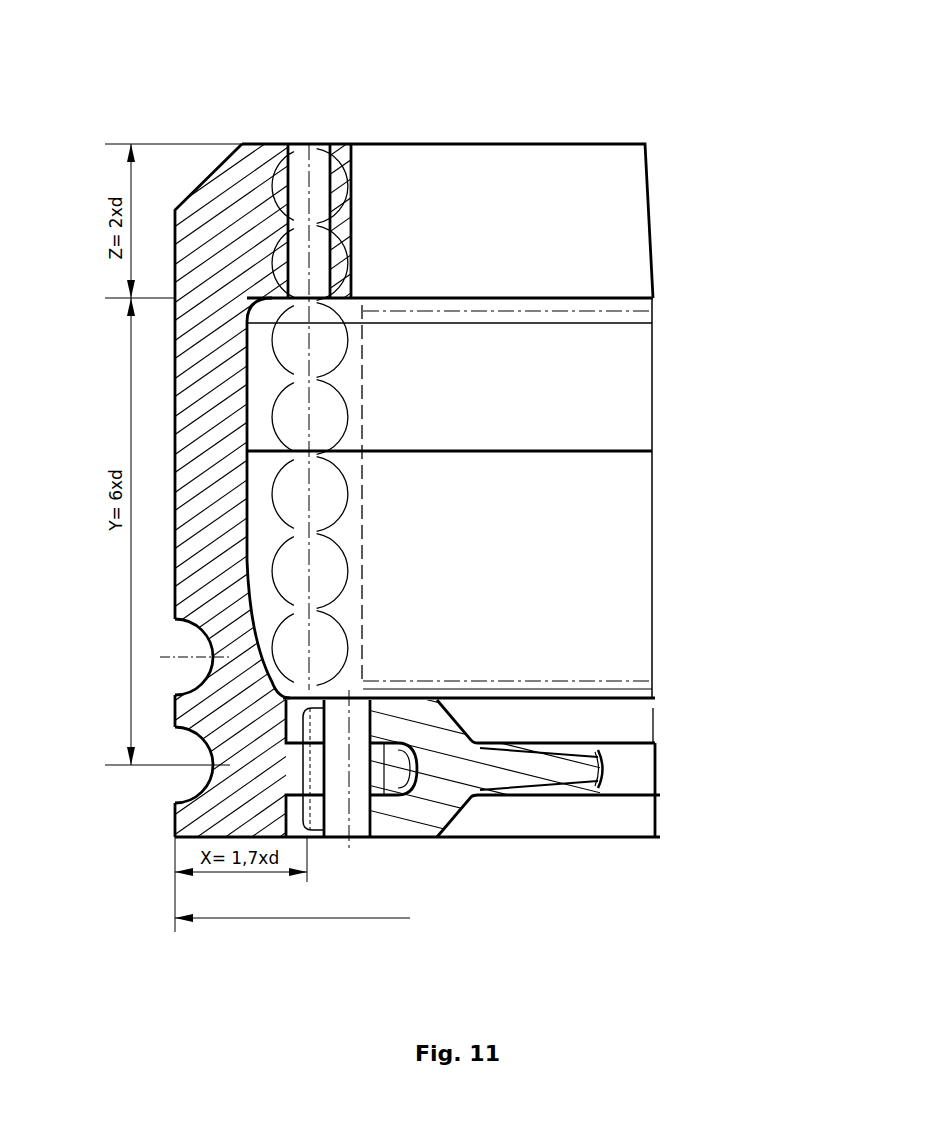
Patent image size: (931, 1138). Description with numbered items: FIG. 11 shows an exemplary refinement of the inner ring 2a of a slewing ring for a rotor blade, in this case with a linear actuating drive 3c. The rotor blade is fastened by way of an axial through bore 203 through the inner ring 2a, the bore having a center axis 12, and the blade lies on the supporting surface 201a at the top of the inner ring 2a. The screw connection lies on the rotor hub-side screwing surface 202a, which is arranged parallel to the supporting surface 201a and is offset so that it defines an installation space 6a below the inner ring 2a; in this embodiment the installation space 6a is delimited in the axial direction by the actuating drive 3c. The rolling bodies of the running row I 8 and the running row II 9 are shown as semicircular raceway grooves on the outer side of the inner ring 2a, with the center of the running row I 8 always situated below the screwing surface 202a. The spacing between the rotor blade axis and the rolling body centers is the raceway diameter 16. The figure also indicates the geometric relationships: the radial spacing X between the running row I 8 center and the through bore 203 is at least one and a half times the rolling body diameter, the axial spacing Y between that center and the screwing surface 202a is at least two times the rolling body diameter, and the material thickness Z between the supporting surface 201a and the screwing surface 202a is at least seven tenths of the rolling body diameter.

The inner ring 2a is at (547, 170).
The axial through bore 203 is at (297, 145).
The center axis 12 is at (308, 145).
The supporting surface 201a is at (347, 145).
The screwing surface 202a is at (355, 303).
The installation space 6a is at (363, 499).
The linear actuating drive 3c is at (363, 690).
The running row II 9 is at (175, 656).
The running row I 8 is at (175, 765).
The raceway diameter 16 is at (292, 910).